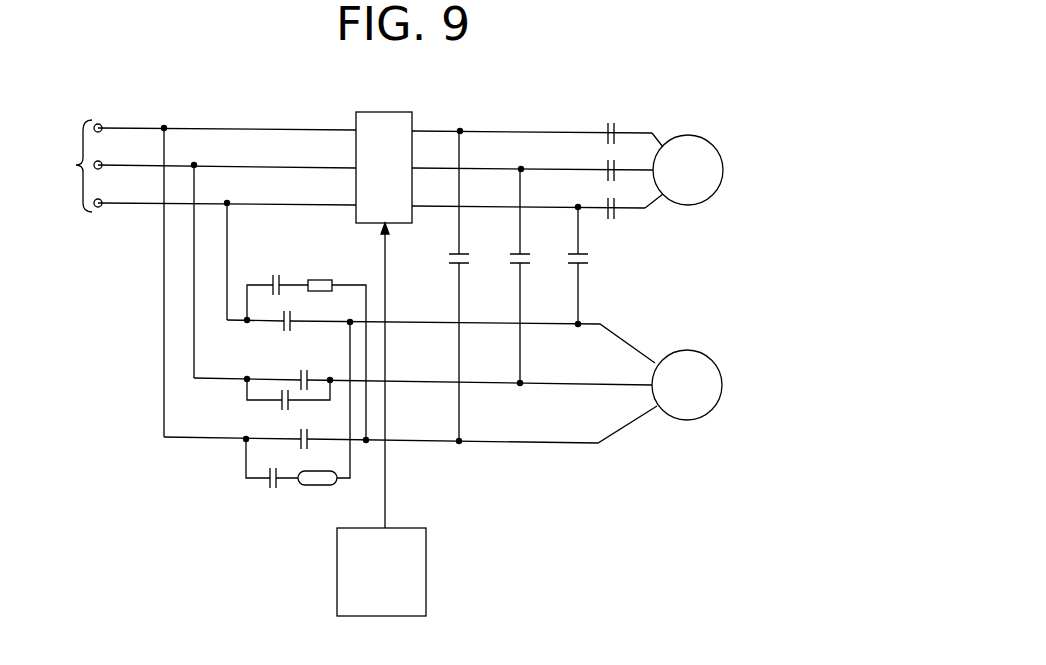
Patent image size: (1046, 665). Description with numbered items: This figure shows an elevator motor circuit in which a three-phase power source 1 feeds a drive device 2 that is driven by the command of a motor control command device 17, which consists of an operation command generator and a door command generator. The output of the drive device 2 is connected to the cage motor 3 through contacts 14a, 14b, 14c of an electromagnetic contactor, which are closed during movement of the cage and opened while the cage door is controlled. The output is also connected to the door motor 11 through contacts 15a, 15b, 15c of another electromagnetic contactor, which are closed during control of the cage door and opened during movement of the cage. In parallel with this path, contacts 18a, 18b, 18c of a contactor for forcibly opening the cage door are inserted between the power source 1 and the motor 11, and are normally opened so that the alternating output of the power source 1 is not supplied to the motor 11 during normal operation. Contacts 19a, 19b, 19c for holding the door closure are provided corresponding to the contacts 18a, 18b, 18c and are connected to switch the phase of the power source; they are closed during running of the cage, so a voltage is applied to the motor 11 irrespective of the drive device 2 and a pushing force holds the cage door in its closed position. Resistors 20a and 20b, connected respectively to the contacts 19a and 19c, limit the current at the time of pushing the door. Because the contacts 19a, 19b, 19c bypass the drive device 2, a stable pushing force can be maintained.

The power source 1 is at (81, 166).
The drive device 2 is at (387, 112).
The motor 3 is at (723, 170).
The motor 11 is at (722, 386).
The contact 14a is at (610, 122).
The contact 14b is at (610, 160).
The contact 14c is at (610, 198).
The contact 15a is at (452, 256).
The contact 15b is at (512, 256).
The contact 15c is at (572, 256).
The motor control command device 17 is at (426, 575).
The contact 18a is at (285, 331).
The contact 18b is at (304, 370).
The contact 18c is at (310, 416).
The contact 19a is at (277, 276).
The contact 19b is at (282, 403).
The contact 19c is at (268, 488).
The resistor 20a is at (323, 280).
The resistor 20b is at (316, 486).